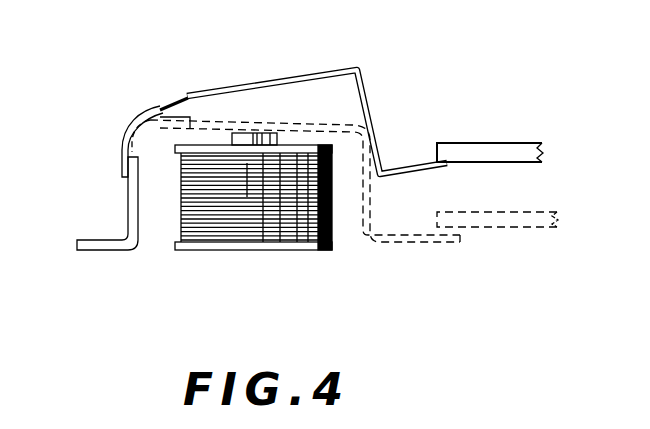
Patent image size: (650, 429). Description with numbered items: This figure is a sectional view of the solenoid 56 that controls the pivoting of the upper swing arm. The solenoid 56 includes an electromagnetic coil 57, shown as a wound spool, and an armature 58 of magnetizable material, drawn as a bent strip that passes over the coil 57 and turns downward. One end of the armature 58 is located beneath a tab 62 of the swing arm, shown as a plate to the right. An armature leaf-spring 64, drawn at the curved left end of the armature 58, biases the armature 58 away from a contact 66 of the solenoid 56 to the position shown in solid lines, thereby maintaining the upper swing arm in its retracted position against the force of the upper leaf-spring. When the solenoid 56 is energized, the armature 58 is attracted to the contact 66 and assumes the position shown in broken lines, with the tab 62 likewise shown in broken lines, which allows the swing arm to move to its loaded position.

The solenoid 56 is at (142, 77).
The electromagnetic coil 57 is at (190, 217).
The armature 58 is at (364, 82).
The tab 62 is at (496, 143).
The armature leaf-spring 64 is at (132, 116).
The contact 66 is at (257, 137).